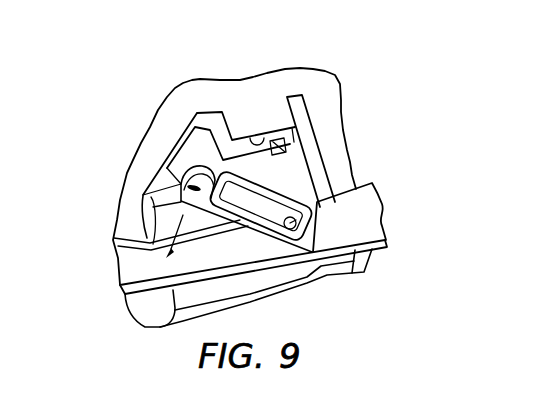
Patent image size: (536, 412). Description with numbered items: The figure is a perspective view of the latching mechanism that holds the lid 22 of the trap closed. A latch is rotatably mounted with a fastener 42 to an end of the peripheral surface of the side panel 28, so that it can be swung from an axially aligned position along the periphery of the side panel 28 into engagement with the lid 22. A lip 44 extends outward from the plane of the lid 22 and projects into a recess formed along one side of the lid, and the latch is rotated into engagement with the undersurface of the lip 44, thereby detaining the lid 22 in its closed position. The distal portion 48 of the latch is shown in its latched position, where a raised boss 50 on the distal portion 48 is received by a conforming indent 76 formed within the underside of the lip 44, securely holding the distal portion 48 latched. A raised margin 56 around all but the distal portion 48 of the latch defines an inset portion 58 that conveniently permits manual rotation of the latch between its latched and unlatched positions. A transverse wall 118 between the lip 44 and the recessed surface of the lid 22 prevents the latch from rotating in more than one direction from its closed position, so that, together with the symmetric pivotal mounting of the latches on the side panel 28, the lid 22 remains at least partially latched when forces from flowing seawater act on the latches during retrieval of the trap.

The lid 22 is at (222, 104).
The indents 76 is at (236, 137).
The lips 44 is at (273, 102).
The transverse walls 118 is at (295, 140).
The raised bosses 50 is at (163, 168).
The distal portions 48 is at (143, 201).
The raised margins 56 is at (224, 178).
The inset portions 58 is at (262, 207).
The fasteners 42 is at (318, 206).
The side panel 28 is at (376, 191).